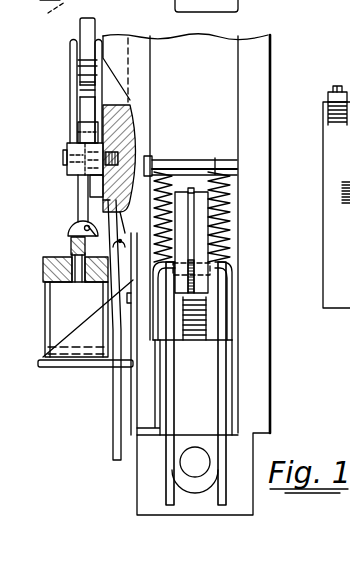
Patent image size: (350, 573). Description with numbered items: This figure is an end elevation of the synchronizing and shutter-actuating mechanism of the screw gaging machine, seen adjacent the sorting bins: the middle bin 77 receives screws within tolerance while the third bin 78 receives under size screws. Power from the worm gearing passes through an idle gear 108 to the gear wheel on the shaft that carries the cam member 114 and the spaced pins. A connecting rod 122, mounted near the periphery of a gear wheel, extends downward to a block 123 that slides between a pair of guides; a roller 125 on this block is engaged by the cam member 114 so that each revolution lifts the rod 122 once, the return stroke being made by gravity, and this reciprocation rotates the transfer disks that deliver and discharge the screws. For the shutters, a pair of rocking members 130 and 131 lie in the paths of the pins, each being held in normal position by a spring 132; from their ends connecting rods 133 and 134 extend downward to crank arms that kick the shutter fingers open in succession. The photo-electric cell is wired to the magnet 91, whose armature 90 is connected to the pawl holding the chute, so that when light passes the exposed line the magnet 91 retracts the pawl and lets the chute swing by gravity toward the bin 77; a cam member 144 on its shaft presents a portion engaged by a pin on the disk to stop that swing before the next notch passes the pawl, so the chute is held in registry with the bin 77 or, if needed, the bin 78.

The middle bin 77 is at (44, 21).
The third bin 78 is at (324, 163).
The cam member 144 is at (84, 30).
The cam member 114 is at (100, 60).
The connecting rod 122 is at (72, 100).
The block 123 is at (114, 130).
The roller 125 is at (82, 180).
The armature 90 is at (70, 251).
The magnet 91 is at (56, 310).
The spring 132 is at (180, 167).
The rocking member 131 is at (181, 215).
The rocking member 130 is at (201, 250).
The idle gear 108 is at (191, 342).
The connecting rod 133 is at (223, 392).
The connecting rod 134 is at (170, 492).